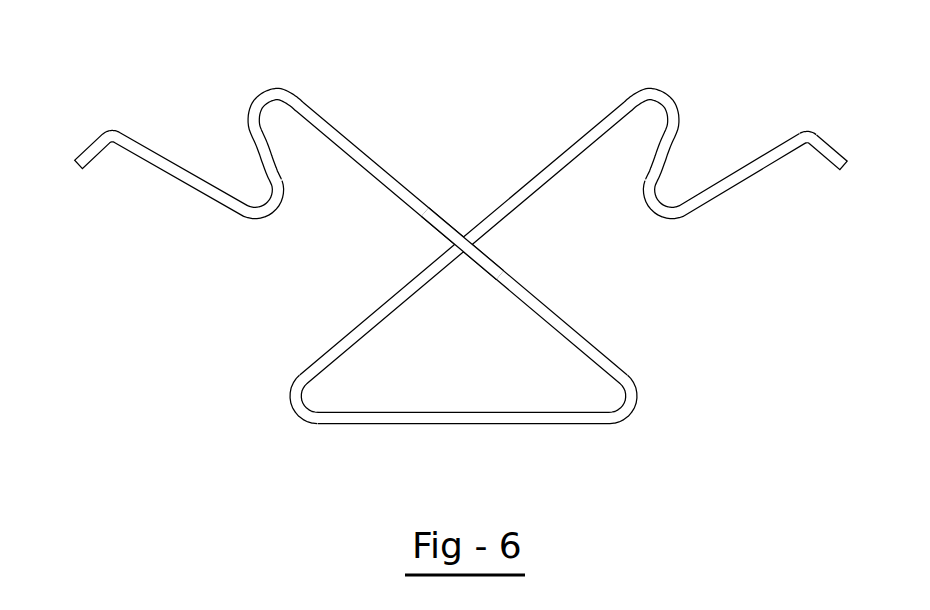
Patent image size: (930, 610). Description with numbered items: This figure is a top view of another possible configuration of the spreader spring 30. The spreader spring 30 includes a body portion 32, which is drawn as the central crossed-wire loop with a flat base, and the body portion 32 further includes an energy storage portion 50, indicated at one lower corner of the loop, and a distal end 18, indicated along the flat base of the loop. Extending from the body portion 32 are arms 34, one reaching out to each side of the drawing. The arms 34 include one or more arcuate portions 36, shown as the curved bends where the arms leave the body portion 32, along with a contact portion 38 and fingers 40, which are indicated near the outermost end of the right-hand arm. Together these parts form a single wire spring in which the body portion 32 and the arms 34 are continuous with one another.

The spreader spring 30 is at (180, 432).
The body portion 32 is at (582, 336).
The arms 34 is at (167, 153).
The arcuate portions 36 is at (641, 83).
The contact portion 38 is at (848, 178).
The fingers 40 is at (838, 147).
The distal end 18 is at (462, 425).
The energy storage portion 50 is at (270, 437).